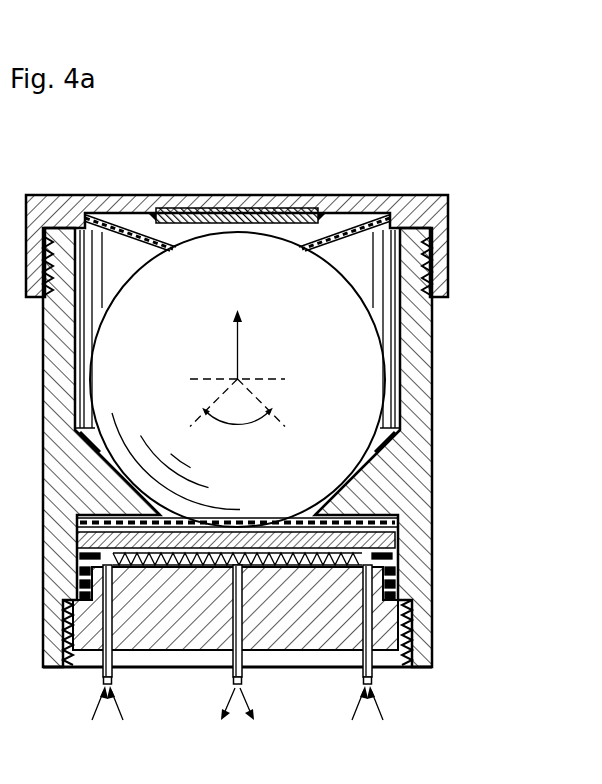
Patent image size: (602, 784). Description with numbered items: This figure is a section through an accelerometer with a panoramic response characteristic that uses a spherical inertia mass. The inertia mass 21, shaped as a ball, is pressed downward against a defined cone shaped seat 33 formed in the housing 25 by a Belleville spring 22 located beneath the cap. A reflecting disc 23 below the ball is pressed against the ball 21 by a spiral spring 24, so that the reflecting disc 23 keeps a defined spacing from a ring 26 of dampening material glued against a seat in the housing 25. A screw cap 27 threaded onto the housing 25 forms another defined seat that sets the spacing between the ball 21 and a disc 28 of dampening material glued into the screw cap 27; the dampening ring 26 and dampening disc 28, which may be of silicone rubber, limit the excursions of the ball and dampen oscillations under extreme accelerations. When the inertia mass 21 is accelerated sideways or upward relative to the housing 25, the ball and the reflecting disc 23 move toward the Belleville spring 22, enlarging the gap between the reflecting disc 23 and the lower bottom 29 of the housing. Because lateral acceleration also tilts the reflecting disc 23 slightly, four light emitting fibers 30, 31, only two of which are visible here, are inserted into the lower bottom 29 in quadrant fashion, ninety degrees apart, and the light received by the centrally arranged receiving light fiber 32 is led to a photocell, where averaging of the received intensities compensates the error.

The inertia mass 21 is at (347, 337).
The Belleville spring 22 is at (127, 226).
The reflecting disc 23 is at (383, 538).
The spiral spring 24 is at (390, 577).
The housing 25 is at (413, 395).
The ring of dampening material 26 is at (383, 514).
The screw cap 27 is at (348, 200).
The disc of dampening material 28 is at (288, 208).
The lower bottom 29 is at (385, 640).
The light emitting fiber 30 is at (100, 675).
The light emitting fiber 31 is at (375, 672).
The receiving light fiber 32 is at (247, 680).
The cone shaped seat 33 is at (355, 487).